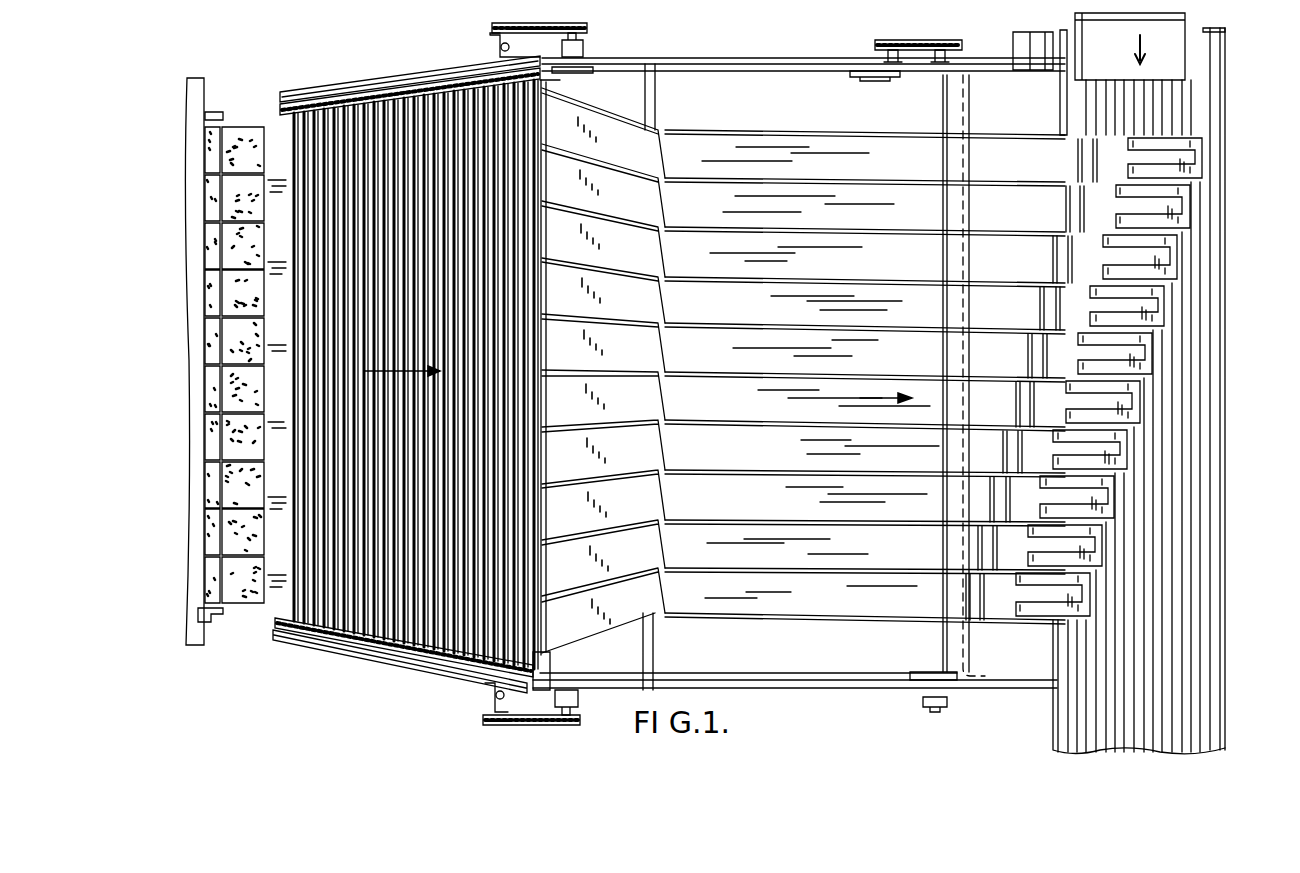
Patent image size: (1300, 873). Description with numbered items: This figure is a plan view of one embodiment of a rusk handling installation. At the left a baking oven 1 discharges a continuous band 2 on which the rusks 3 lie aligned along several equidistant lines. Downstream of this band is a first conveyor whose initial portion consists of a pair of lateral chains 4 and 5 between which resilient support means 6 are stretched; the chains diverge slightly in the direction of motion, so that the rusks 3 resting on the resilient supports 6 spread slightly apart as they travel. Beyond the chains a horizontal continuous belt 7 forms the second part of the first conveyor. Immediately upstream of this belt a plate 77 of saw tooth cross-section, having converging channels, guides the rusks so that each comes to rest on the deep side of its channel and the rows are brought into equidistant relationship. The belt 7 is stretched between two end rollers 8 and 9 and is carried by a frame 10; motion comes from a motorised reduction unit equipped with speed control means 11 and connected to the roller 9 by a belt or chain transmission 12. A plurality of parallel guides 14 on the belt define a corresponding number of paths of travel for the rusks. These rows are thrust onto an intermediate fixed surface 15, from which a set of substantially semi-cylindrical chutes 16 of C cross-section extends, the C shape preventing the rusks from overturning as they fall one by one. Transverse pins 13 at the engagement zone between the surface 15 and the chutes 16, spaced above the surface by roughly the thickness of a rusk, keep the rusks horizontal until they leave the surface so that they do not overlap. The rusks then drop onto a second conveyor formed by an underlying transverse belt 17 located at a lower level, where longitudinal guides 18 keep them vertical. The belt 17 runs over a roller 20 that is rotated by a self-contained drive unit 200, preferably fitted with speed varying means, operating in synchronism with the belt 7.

The baking oven 1 is at (200, 102).
The continuous band 2 is at (204, 616).
The rusks 3 is at (228, 138).
The lateral chain 4 is at (376, 94).
The lateral chain 5 is at (366, 650).
The resilient support means 6 is at (400, 104).
The horizontal continuous belt 7 is at (746, 96).
The plate of saw tooth cross-section 77 is at (613, 102).
The end roller 8 is at (586, 72).
The end roller 9 is at (918, 684).
The frame 10 is at (816, 66).
The speed control means 11 is at (868, 76).
The belt or chain transmission 12 is at (917, 42).
The transverse pins 13 is at (972, 612).
The parallel guides 14 is at (781, 614).
The intermediate fixed surface 15 is at (985, 150).
The chutes 16 is at (1000, 612).
The transverse belt 17 is at (1212, 62).
The longitudinal guides 18 is at (1186, 612).
The roller 20 is at (1206, 28).
The self-contained drive unit 200 is at (1034, 36).